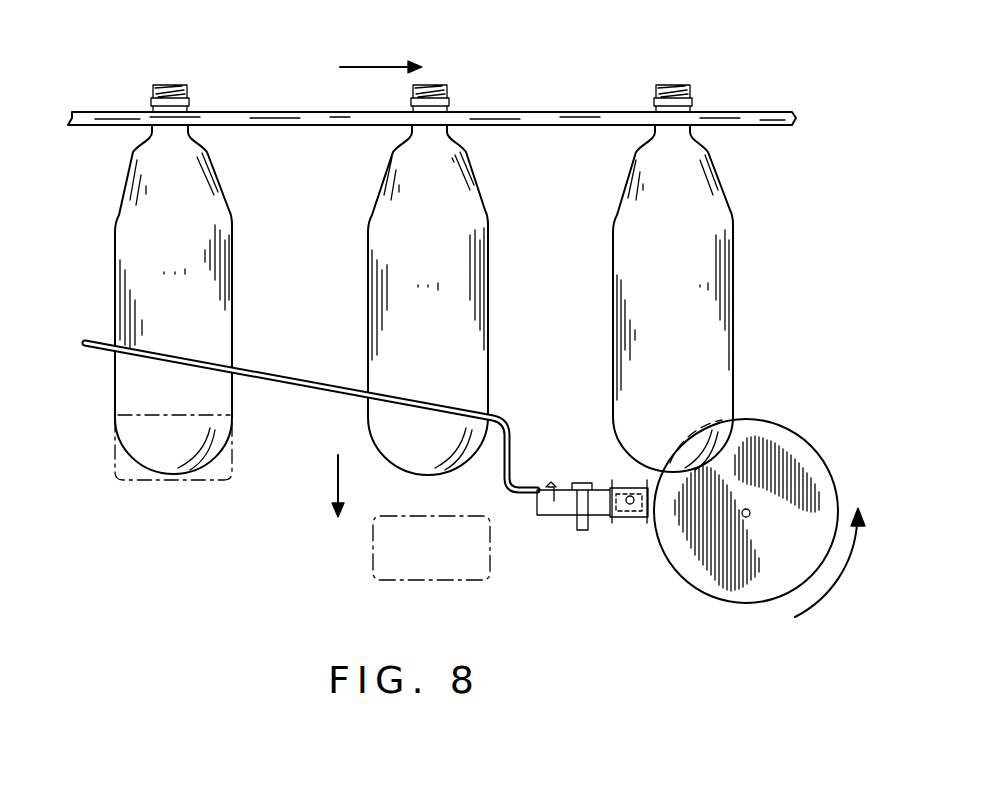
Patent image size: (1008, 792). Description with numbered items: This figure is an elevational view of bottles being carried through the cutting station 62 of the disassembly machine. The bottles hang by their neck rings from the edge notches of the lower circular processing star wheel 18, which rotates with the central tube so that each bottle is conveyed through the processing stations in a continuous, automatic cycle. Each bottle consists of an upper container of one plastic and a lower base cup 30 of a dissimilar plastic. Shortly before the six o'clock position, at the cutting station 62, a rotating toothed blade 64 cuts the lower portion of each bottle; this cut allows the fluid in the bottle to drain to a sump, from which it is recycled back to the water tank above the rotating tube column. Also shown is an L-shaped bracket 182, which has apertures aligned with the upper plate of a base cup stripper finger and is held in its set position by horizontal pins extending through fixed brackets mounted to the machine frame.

The star wheel 18 is at (745, 112).
The base cup 30 is at (490, 578).
The cutting station 62 is at (769, 477).
The rotating toothed blade 64 is at (692, 572).
The L-shaped bracket 182 is at (626, 520).